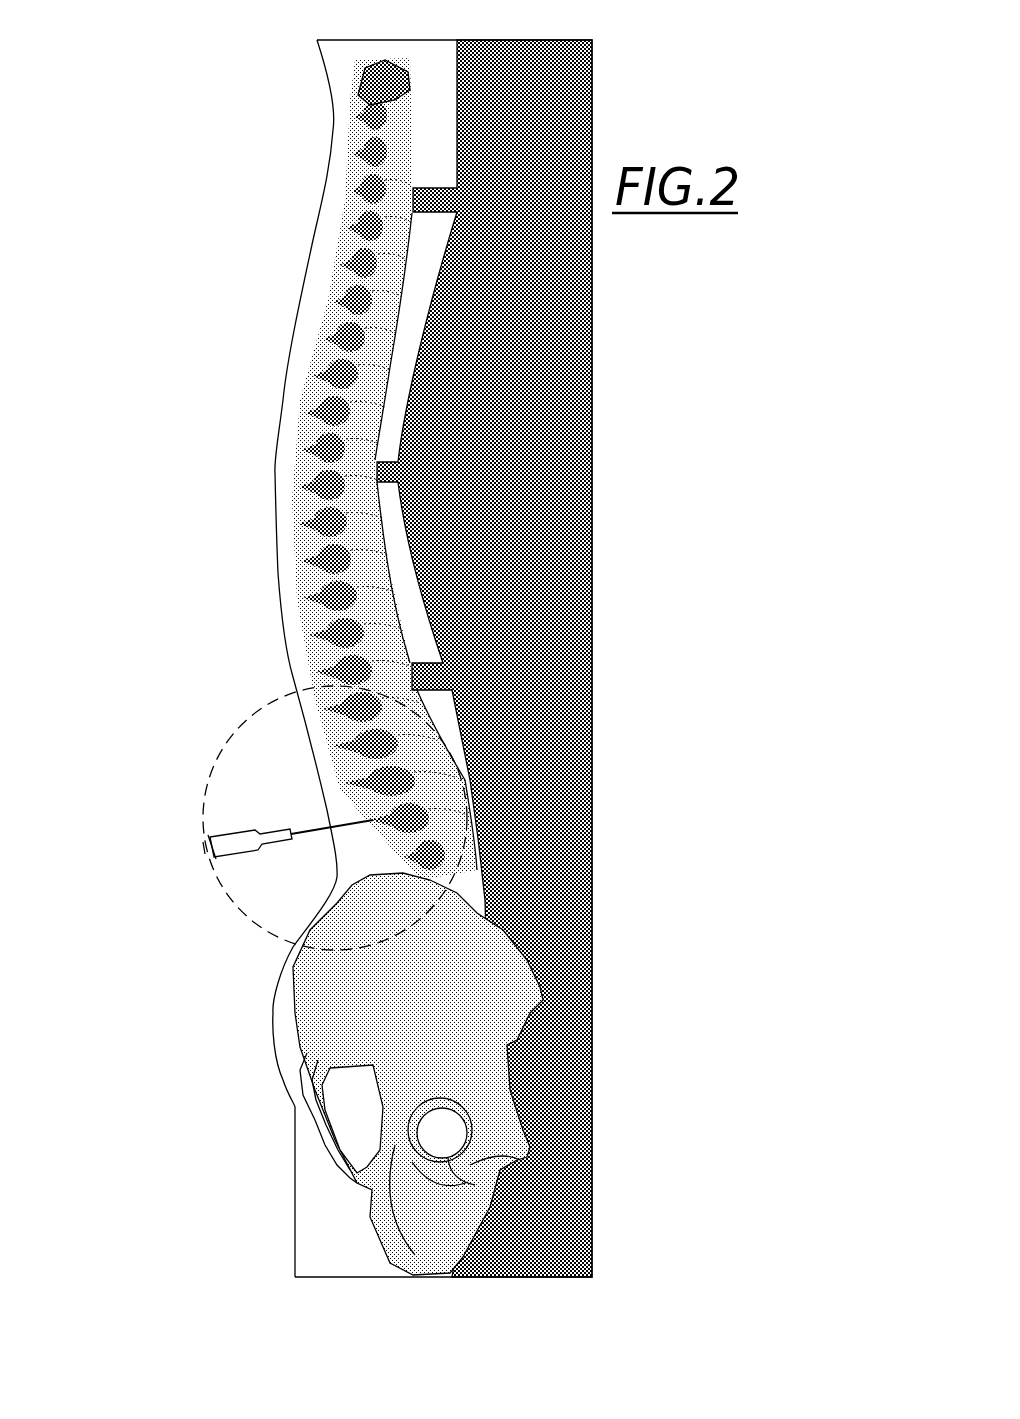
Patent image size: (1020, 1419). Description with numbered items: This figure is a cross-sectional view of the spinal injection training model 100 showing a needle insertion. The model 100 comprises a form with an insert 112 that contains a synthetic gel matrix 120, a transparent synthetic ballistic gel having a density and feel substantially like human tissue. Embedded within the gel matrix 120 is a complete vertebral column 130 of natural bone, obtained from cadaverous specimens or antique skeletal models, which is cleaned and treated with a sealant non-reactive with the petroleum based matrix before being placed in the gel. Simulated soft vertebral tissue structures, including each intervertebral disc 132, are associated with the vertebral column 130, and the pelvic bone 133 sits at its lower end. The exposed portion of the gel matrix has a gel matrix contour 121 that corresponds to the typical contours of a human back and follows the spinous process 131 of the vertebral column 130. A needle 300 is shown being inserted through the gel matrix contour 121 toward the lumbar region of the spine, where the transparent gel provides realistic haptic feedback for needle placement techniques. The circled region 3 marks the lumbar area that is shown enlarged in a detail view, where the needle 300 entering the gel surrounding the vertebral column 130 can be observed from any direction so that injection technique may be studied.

The spinal model 100 is at (188, 123).
The insert 112 is at (563, 607).
The synthetic gel matrix 120 is at (360, 58).
The gel matrix contour 121 is at (275, 427).
The vertebral column 130 is at (307, 373).
The spinous process 131 is at (340, 130).
The intervertebral disc 132 is at (307, 527).
The pelvic bone 133 is at (517, 985).
The detail view region 3 is at (223, 757).
The needle 300 is at (210, 847).